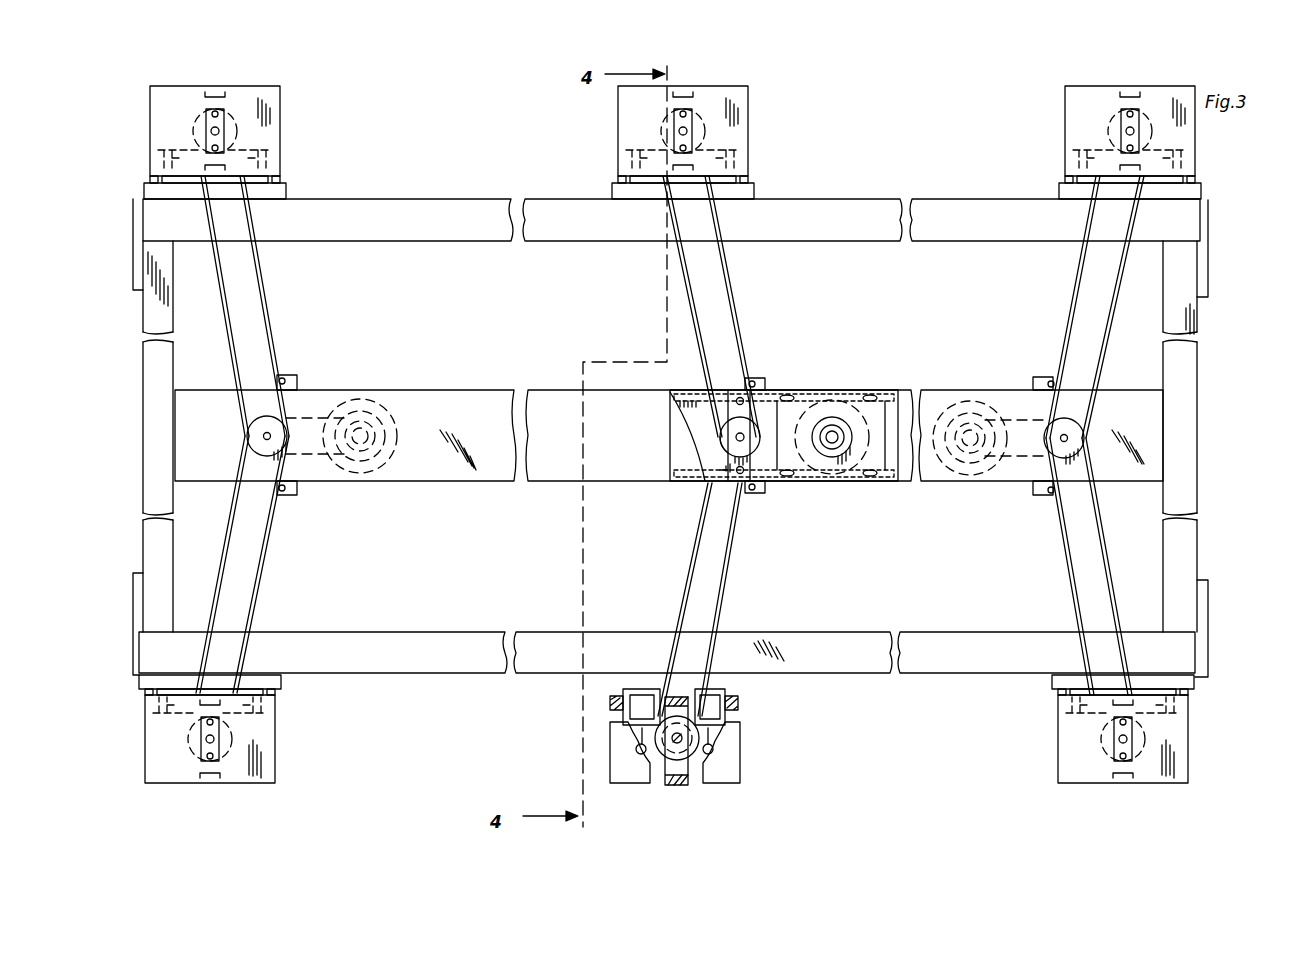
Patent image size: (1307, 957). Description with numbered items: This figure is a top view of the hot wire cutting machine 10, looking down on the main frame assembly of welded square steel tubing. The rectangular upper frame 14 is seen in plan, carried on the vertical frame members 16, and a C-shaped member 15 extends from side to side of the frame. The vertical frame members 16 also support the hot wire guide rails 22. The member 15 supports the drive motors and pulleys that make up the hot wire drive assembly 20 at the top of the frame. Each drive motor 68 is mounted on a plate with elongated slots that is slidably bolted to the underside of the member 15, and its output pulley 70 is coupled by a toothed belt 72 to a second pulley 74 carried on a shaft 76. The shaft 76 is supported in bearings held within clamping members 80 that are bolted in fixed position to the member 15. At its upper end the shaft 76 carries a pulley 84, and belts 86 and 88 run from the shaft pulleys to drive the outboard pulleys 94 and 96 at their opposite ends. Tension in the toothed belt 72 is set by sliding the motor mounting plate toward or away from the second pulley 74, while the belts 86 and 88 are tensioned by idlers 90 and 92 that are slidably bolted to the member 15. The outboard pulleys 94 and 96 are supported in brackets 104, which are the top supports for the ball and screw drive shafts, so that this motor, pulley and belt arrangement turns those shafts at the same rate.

The hot wire cutting machine 10 is at (869, 178).
The upper frame 14 is at (437, 208).
The C-shaped member 15 is at (433, 396).
The vertical frame members 16 is at (160, 148).
The hot wire drive assembly 20 is at (330, 380).
The hot wire guide rails 22 is at (638, 778).
The drive motor 68 is at (372, 398).
The output pulley 70 is at (834, 400).
The toothed belt 72 is at (754, 390).
The second pulley 74 is at (722, 446).
The shaft 76 is at (736, 436).
The clamping members 80 is at (702, 468).
The pulley 84 is at (240, 432).
The belt 86 is at (266, 562).
The belt 88 is at (264, 289).
The idler 90 is at (284, 496).
The idler 92 is at (282, 376).
The pulley 94 is at (220, 758).
The pulley 96 is at (193, 128).
The brackets 104 is at (280, 92).